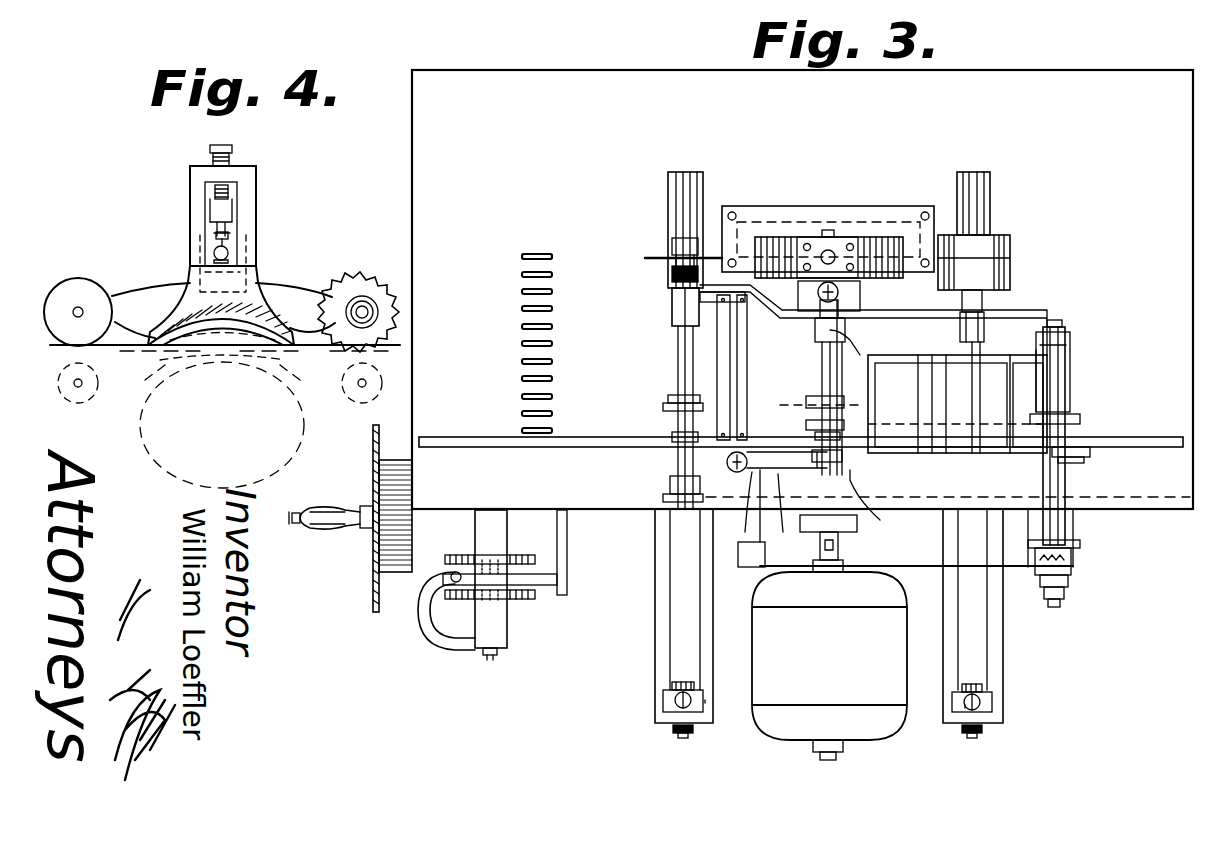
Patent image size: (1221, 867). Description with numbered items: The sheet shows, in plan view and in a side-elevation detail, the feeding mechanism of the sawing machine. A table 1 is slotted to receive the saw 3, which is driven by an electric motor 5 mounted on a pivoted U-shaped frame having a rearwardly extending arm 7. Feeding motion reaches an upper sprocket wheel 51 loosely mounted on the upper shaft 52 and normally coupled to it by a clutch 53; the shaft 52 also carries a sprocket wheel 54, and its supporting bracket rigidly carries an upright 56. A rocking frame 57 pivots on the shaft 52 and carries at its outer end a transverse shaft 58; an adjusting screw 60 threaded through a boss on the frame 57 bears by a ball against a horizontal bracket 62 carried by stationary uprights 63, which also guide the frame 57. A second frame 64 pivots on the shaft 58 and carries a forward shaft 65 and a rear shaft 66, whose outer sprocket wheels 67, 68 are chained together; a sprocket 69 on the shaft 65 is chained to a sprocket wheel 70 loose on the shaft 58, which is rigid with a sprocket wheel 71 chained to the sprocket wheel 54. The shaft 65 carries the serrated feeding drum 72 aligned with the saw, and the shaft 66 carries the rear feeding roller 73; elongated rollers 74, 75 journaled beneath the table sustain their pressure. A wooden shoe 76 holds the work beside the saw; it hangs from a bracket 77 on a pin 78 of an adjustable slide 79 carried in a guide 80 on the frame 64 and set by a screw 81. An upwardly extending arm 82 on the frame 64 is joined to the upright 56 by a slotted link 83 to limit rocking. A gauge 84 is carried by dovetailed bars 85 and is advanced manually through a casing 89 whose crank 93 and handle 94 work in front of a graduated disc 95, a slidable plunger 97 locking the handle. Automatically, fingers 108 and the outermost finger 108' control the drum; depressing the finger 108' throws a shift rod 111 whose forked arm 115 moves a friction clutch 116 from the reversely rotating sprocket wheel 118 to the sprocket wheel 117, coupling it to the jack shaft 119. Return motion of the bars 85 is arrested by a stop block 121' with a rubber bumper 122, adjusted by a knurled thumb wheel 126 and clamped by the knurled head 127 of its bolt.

In FIG. 3, the table 1 is at (584, 88).
In FIG. 4, the saw 3 is at (292, 452).
In FIG. 3, the electric motor 5 is at (870, 685).
In FIG. 3, the rearwardly extending arm 7 is at (657, 427).
In FIG. 3, the upper sprocket wheel 51 is at (1082, 543).
In FIG. 3, the upper shaft 52 is at (1060, 318).
In FIG. 3, the clutch 53 is at (1068, 566).
In FIG. 3, the sprocket wheel 54 is at (1088, 414).
In FIG. 3, the upright 56 is at (1096, 462).
In FIG. 3, the rocking frame 57 is at (986, 378).
In FIG. 3, the transverse shaft 58 is at (812, 365).
In FIG. 3, the adjusting screw 60 is at (738, 473).
In FIG. 3, the horizontal bracket 62 is at (760, 548).
In FIG. 3, the stationary uprights 63 is at (778, 533).
In FIG. 3, the second frame 64 is at (925, 310).
In FIG. 3, the forward shaft 65 is at (670, 352).
In FIG. 3, the rear shaft 66 is at (1006, 347).
In FIG. 3, the sprocket wheel 67 is at (658, 488).
In FIG. 3, the sprocket wheel 68 is at (988, 505).
In FIG. 3, the sprocket 69 is at (704, 394).
In FIG. 3, the sprocket wheel 70 is at (850, 397).
In FIG. 3, the sprocket wheel 71 is at (855, 415).
In FIG. 4, the feeding drum 72 is at (356, 274).
In FIG. 3, the feeding drum 72 is at (658, 262).
In FIG. 4, the rear feeding roller 73 is at (80, 284).
In FIG. 3, the rear feeding roller 73 is at (1018, 266).
In FIG. 4, the elongated roller 74 is at (342, 388).
In FIG. 3, the elongated roller 74 is at (688, 160).
In FIG. 4, the elongated roller 75 is at (80, 405).
In FIG. 3, the elongated roller 75 is at (973, 163).
In FIG. 4, the wooden shoe 76 is at (260, 316).
In FIG. 3, the wooden shoe 76 is at (872, 230).
In FIG. 4, the bracket 77 is at (232, 246).
In FIG. 3, the bracket 77 is at (842, 230).
In FIG. 4, the pin 78 is at (214, 254).
In FIG. 3, the pin 78 is at (826, 226).
In FIG. 4, the adjustable slide 79 is at (232, 218).
In FIG. 4, the guide 80 is at (250, 182).
In FIG. 3, the guide 80 is at (800, 285).
In FIG. 4, the screw 81 is at (215, 192).
In FIG. 3, the screw 81 is at (840, 292).
In FIG. 3, the upwardly extending arm 82 is at (880, 522).
In FIG. 3, the link 83 is at (1046, 390).
In FIG. 3, the gauge 84 is at (468, 452).
In FIG. 3, the bars 85 is at (664, 625).
In FIG. 3, the casing 89 is at (395, 582).
In FIG. 3, the crank 93 is at (363, 513).
In FIG. 3, the handle 94 is at (335, 533).
In FIG. 3, the disc 95 is at (366, 600).
In FIG. 3, the slidable plunger 97 is at (292, 522).
In FIG. 3, the fingers 108 is at (495, 343).
In FIG. 3, the outermost finger 108' is at (521, 240).
In FIG. 3, the shift rod 111 is at (572, 545).
In FIG. 3, the forked arm 115 is at (565, 573).
In FIG. 3, the clutch 116 is at (533, 597).
In FIG. 3, the sprocket wheel 117 is at (522, 550).
In FIG. 3, the reversely rotating sprocket wheel 118 is at (518, 604).
In FIG. 3, the jack shaft 119 is at (490, 660).
In FIG. 3, the block 121' is at (832, 703).
In FIG. 3, the rubber bumper 122 is at (672, 686).
In FIG. 3, the knurled thumb nut 126 is at (668, 733).
In FIG. 3, the knurled head 127 is at (705, 700).